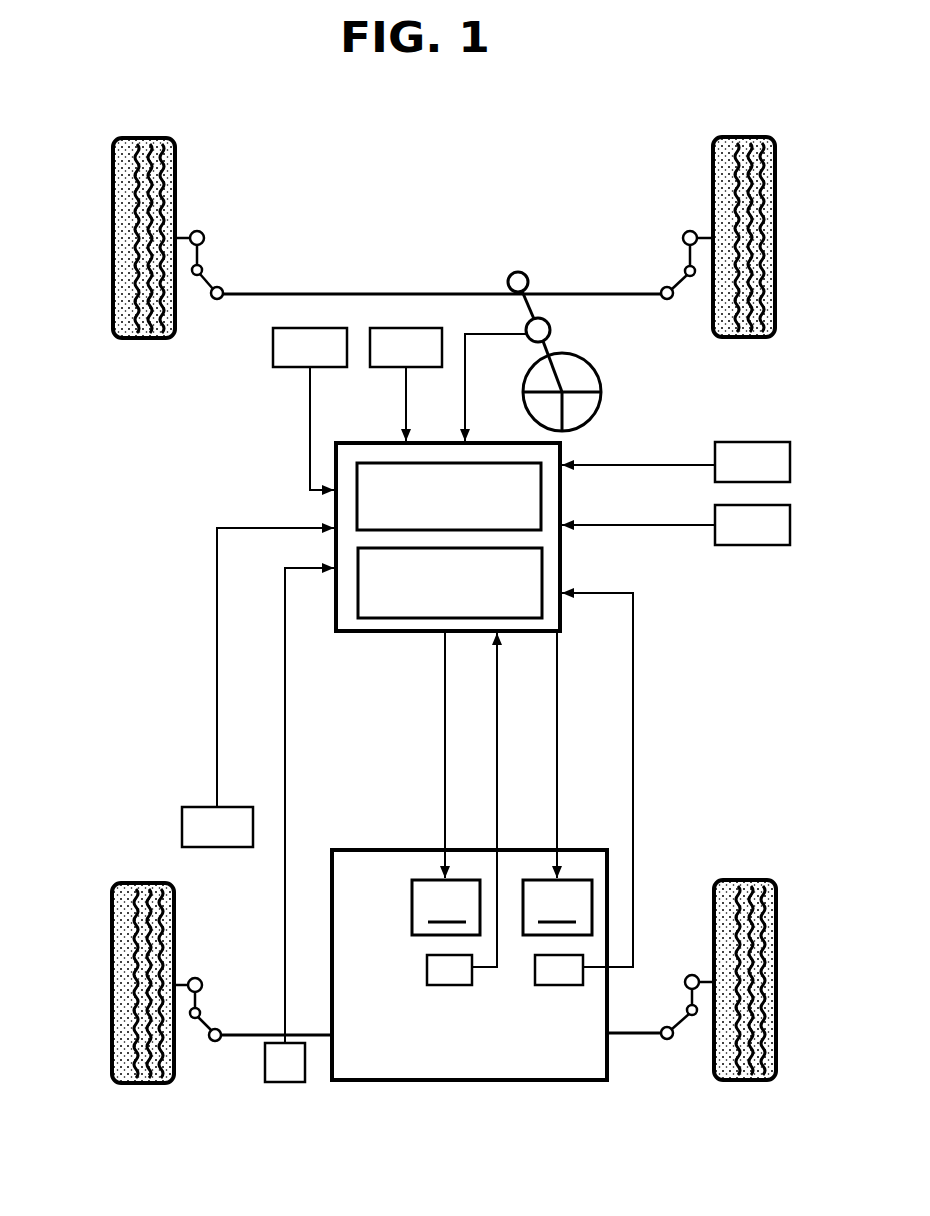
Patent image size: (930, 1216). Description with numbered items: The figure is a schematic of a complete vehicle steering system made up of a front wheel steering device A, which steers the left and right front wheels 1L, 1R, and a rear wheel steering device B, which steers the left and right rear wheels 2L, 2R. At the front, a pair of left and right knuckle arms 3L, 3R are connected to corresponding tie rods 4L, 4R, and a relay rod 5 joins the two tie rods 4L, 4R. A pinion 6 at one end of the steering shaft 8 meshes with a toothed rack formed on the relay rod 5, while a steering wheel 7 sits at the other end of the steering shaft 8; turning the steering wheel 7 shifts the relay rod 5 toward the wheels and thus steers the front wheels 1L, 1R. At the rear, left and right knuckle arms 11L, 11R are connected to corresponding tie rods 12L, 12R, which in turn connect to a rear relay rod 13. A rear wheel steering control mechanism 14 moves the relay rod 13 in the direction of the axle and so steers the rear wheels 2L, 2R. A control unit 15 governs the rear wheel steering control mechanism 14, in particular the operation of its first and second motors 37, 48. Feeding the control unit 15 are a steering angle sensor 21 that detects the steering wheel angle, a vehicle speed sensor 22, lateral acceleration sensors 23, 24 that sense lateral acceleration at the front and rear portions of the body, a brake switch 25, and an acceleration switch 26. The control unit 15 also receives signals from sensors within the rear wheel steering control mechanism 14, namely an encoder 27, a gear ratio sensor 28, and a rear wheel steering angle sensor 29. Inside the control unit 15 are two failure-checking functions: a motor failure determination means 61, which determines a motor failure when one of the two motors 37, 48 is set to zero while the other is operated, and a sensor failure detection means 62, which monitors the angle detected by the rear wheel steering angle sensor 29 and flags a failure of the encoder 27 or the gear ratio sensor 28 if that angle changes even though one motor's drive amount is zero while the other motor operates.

The left front wheel 1L is at (112, 210).
The right front wheel 1R is at (776, 218).
The left rear wheel 2L is at (113, 940).
The right rear wheel 2R is at (776, 931).
The left front knuckle arm 3L is at (200, 254).
The right front knuckle arm 3R is at (687, 253).
The left front tie rod 4L is at (213, 302).
The right front tie rod 4R is at (682, 295).
The relay rod 5 is at (354, 292).
The pinion 6 is at (521, 272).
The steering wheel 7 is at (599, 397).
The steering shaft 8 is at (527, 310).
The left rear knuckle arm 11L is at (200, 995).
The right rear knuckle arm 11R is at (686, 995).
The left rear tie rod 12L is at (208, 1041).
The right rear tie rod 12R is at (679, 1040).
The rear relay rod 13 is at (315, 1042).
The rear wheel steering control mechanism 14 is at (482, 873).
The control unit 15 is at (473, 544).
The steering angle sensor 21 is at (551, 331).
The vehicle speed sensor 22 is at (383, 369).
The lateral acceleration sensor 23 is at (279, 369).
The lateral acceleration sensor 24 is at (220, 849).
The brake switch 25 is at (752, 442).
The acceleration switch 26 is at (752, 547).
The encoder 27 is at (448, 987).
The gear ratio sensor 28 is at (561, 987).
The rear wheel steering angle sensor 29 is at (273, 1084).
The first motor 37 is at (446, 783).
The second motor 48 is at (557, 783).
The motor failure determination means 61 is at (493, 463).
The sensor failure detection means 62 is at (545, 567).
The front wheel steering device A is at (452, 250).
The rear wheel steering device B is at (544, 1096).